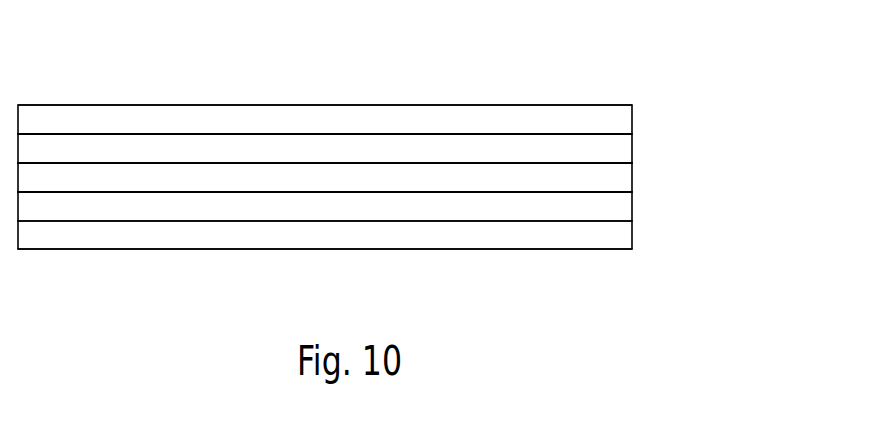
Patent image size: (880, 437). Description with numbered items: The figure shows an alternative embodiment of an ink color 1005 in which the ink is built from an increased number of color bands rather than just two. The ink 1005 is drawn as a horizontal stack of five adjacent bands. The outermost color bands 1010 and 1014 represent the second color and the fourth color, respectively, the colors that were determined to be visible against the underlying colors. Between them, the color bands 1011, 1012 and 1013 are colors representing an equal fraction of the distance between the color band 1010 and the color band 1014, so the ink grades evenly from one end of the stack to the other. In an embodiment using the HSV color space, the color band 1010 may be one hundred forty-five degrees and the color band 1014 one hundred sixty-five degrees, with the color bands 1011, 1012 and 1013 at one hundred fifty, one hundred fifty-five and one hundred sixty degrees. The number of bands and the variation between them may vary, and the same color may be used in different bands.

The multilayer stack 1005 is at (95, 272).
The color band 1010 is at (600, 117).
The color band 1011 is at (608, 150).
The color band 1012 is at (610, 178).
The color band 1013 is at (615, 208).
The color band 1014 is at (615, 240).